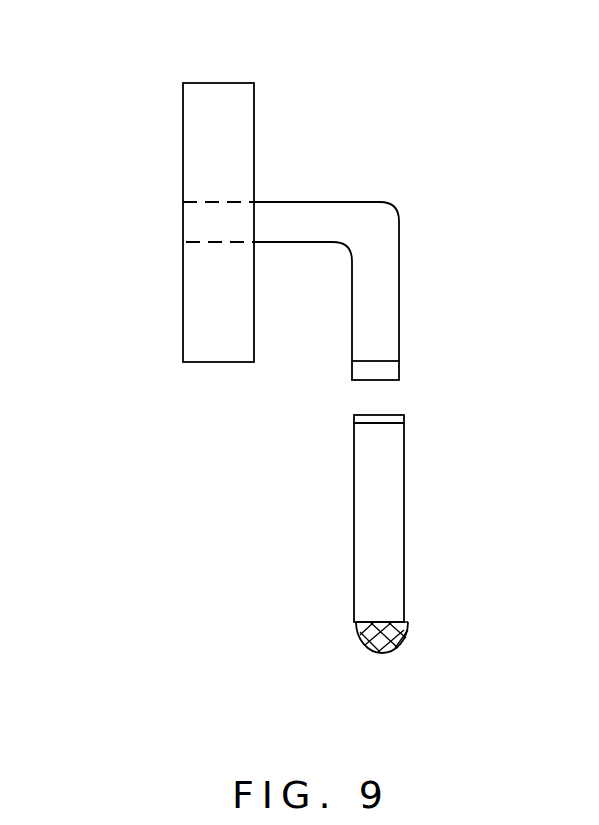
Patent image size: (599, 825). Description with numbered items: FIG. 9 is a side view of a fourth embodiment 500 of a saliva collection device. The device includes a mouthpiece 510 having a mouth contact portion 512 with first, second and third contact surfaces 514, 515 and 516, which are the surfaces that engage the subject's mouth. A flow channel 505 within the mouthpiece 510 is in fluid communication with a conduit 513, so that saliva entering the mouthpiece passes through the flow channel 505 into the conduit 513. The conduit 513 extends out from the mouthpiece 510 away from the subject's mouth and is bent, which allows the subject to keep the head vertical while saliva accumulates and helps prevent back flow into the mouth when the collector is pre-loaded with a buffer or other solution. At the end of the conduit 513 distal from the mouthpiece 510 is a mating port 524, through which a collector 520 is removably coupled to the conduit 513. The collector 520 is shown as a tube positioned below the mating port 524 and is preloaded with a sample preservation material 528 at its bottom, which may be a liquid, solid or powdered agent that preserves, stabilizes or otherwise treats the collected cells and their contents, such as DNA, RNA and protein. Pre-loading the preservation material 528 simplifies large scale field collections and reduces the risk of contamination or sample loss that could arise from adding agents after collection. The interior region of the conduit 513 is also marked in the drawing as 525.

The fourth embodiment 500 is at (405, 63).
The mouthpiece 510 is at (140, 122).
The mouth contact portion 512 is at (197, 170).
The flow channel 505 is at (175, 233).
The conduit 513 is at (402, 278).
The arm interior 525 is at (386, 309).
The mating port 524 is at (402, 374).
The first contact surface 514 is at (255, 345).
The second contact surface 515 is at (220, 362).
The third contact surface 516 is at (183, 342).
The collector 520 is at (415, 518).
The preservation material 528 is at (400, 616).